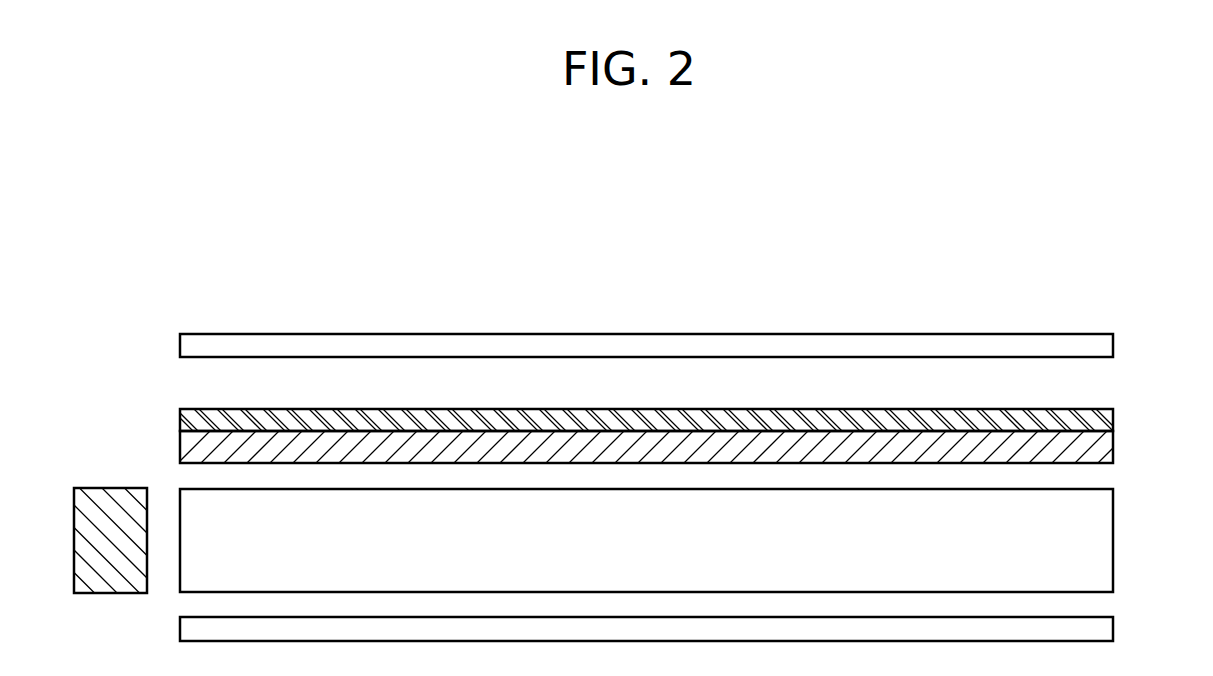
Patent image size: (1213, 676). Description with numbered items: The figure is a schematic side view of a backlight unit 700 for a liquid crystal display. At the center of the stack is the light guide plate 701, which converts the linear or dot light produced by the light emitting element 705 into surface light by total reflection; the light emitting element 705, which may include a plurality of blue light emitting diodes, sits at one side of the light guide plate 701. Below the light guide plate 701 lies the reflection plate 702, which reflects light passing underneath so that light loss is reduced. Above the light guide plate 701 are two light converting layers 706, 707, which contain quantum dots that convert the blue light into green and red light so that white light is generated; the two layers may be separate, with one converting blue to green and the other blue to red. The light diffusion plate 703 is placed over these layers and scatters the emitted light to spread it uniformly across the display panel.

The backlight unit 700 is at (735, 316).
The light guide plate 701 is at (1098, 540).
The reflection plate 702 is at (1098, 629).
The light diffusion plate 703 is at (1098, 345).
The light emitting element 705 is at (108, 503).
The light converting layer 706 is at (1100, 455).
The light converting layer 707 is at (1100, 420).